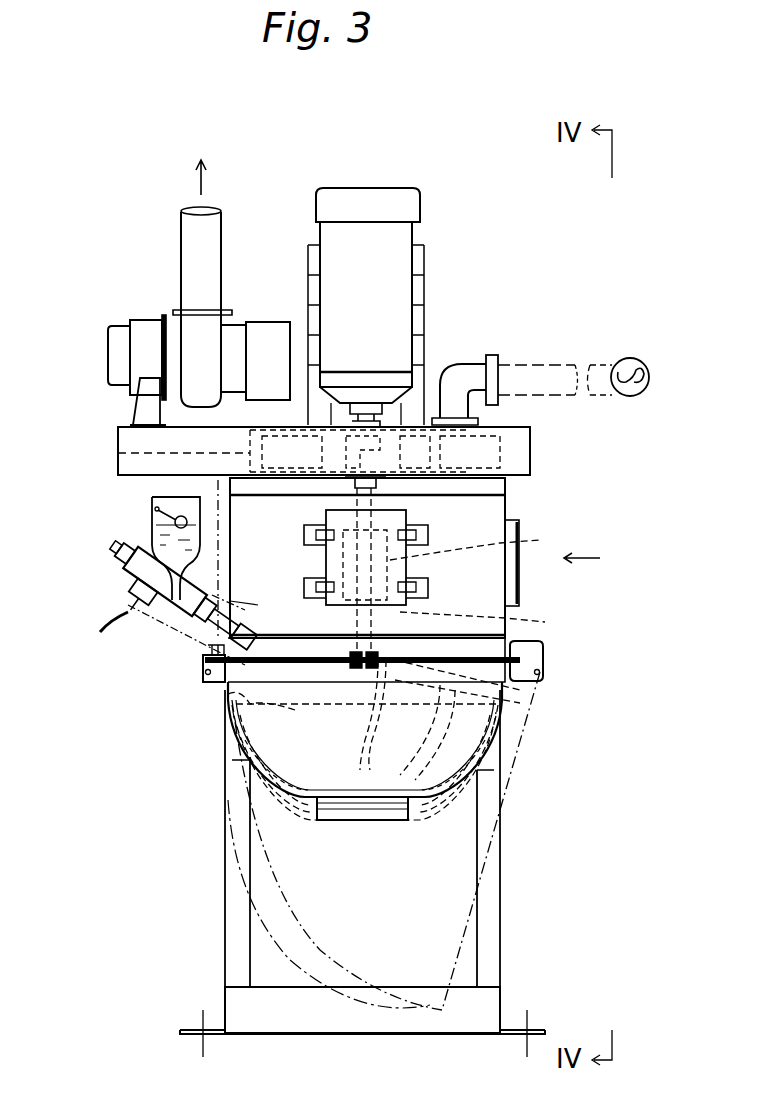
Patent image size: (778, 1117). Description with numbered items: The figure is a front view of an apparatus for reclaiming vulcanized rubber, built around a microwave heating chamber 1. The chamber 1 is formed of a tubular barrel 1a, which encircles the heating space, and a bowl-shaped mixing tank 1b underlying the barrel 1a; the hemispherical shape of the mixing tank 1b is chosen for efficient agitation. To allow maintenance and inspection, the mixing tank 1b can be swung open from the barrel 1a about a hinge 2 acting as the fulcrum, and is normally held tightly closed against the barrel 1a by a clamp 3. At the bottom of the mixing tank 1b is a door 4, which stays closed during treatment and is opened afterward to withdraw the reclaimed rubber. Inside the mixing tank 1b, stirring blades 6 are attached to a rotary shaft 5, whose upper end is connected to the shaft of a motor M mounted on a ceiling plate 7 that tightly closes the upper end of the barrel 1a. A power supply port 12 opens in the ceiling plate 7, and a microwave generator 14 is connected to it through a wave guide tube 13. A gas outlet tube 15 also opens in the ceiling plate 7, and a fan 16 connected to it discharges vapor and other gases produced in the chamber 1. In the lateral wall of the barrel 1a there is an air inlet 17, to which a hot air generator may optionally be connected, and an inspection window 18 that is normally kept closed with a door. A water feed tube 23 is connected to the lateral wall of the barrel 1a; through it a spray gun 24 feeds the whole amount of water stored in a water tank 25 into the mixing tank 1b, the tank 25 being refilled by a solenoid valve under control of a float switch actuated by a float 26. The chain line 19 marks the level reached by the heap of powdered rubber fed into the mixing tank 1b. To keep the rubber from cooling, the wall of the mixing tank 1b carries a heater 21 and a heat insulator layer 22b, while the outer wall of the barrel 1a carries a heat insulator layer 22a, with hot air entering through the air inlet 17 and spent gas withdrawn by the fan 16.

The microwave heating chamber 1 is at (287, 741).
The tubular barrel 1a is at (215, 670).
The mixing tank 1b is at (100, 690).
The hinge 2 is at (538, 660).
The clamp 3 is at (208, 680).
The door 4 is at (365, 815).
The rotary shaft 5 is at (431, 557).
The stirring blades 6 is at (500, 732).
The ceiling plate 7 is at (300, 470).
The power supply port 12 is at (455, 478).
The wave guide tube 13 is at (462, 388).
The microwave generator 14 is at (622, 394).
The gas outlet tube 15 is at (122, 460).
The fan 16 is at (186, 375).
The air inlet 17 is at (508, 580).
The inspection window 18 is at (486, 625).
The chain line 19 is at (232, 716).
The heater 21 is at (240, 780).
The heat insulator layer 22a is at (212, 598).
The heat insulator layer 22b is at (240, 804).
The water feed tube 23 is at (225, 620).
The spray gun 24 is at (135, 576).
The water tank 25 is at (158, 530).
The float 26 is at (181, 514).
The motor M is at (404, 292).